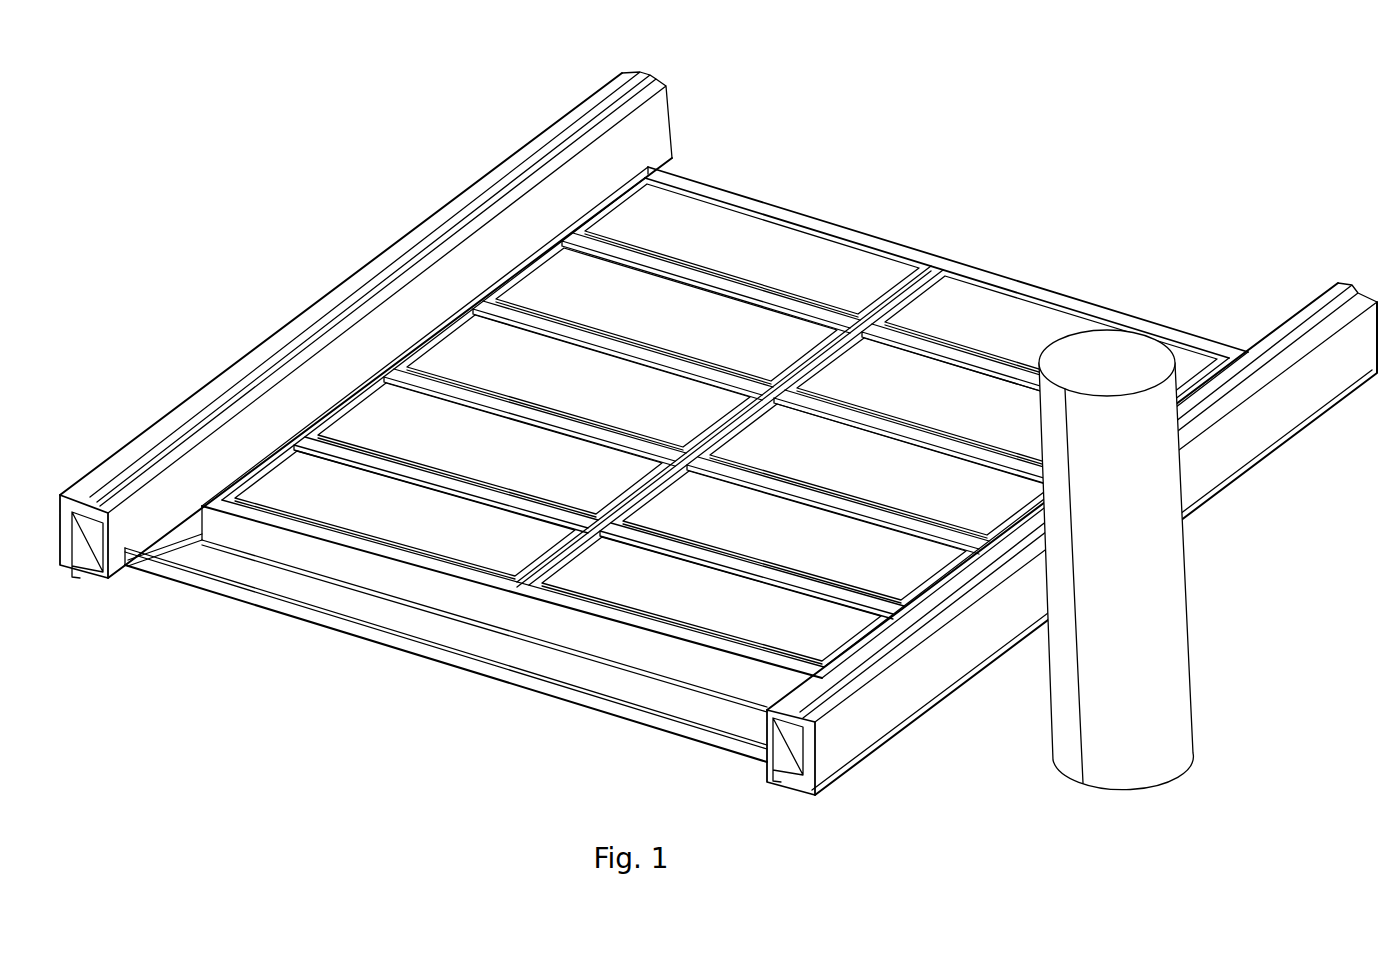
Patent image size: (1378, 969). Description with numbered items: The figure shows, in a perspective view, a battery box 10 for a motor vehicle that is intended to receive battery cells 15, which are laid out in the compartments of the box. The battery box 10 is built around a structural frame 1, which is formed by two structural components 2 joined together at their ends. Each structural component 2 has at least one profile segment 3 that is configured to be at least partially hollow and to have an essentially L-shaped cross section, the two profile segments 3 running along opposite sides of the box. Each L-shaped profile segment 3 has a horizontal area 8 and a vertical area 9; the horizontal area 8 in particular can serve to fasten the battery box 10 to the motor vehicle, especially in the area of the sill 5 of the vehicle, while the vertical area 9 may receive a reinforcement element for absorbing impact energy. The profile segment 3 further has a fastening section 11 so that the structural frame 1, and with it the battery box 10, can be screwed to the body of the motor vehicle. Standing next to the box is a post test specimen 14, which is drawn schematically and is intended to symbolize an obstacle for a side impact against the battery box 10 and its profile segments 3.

The structural frame 1 is at (250, 600).
The structural component 2 is at (333, 602).
The profile segment 3 is at (425, 605).
The sill 5 is at (232, 318).
The horizontal area 8 is at (518, 650).
The vertical area 9 is at (650, 657).
The battery box 10 is at (788, 208).
The fastening section 11 is at (1228, 493).
The post test specimen 14 is at (1160, 665).
The battery cells 15 is at (1018, 317).